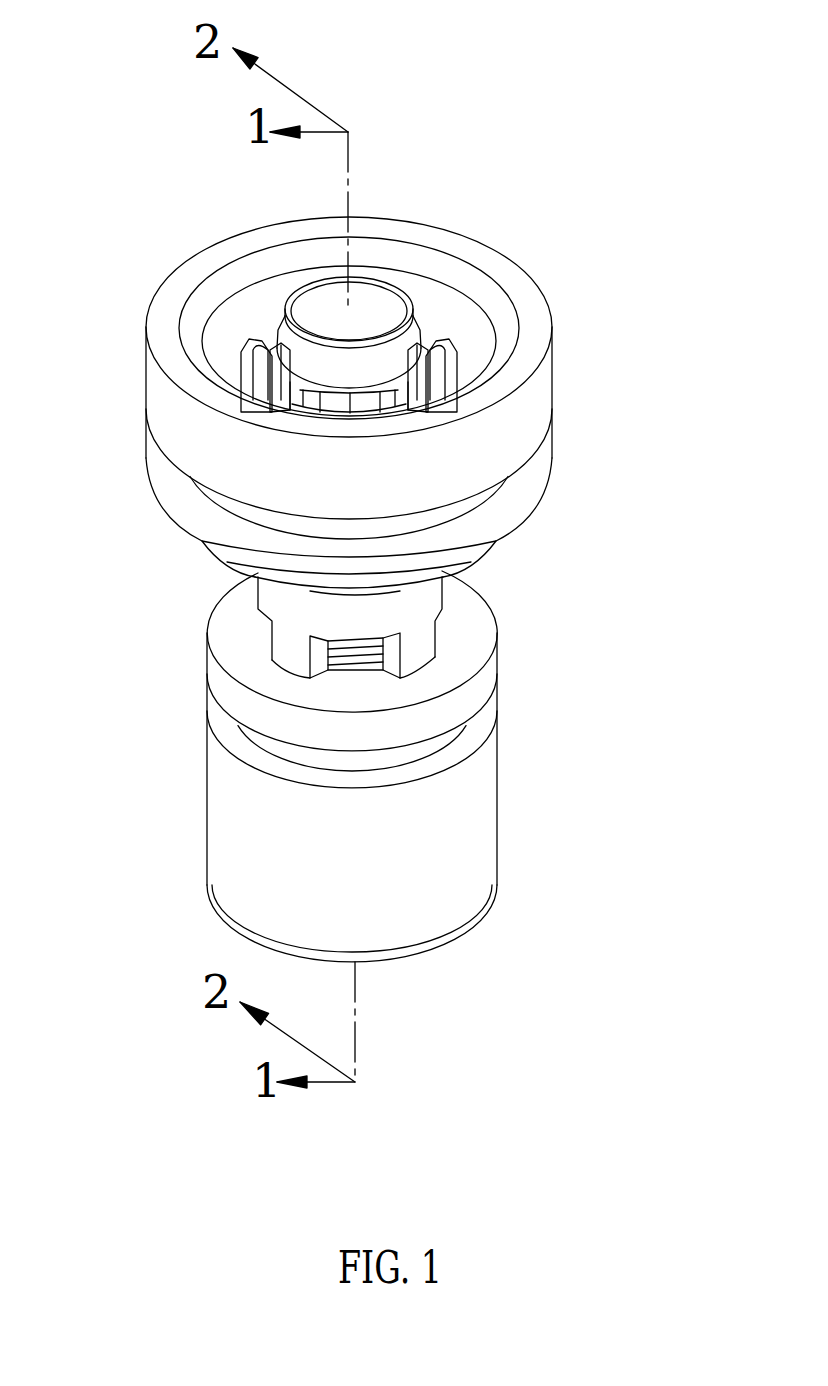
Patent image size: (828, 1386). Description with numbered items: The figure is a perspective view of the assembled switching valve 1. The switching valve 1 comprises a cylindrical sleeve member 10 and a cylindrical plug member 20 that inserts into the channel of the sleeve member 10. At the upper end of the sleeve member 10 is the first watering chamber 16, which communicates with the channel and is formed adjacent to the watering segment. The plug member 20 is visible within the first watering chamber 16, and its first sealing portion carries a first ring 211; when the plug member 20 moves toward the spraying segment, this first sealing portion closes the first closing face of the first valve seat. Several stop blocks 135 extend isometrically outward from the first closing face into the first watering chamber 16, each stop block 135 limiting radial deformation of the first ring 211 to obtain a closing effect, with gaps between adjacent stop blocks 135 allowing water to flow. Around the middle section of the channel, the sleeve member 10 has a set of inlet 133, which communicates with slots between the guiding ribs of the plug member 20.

The switching valve 1 is at (584, 610).
The sleeve member 10 is at (564, 371).
The first watering chamber 16 is at (465, 337).
The plug member 20 is at (431, 294).
The first ring 211 is at (283, 347).
The stop blocks 135 is at (242, 348).
The set of inlet 133 is at (390, 658).